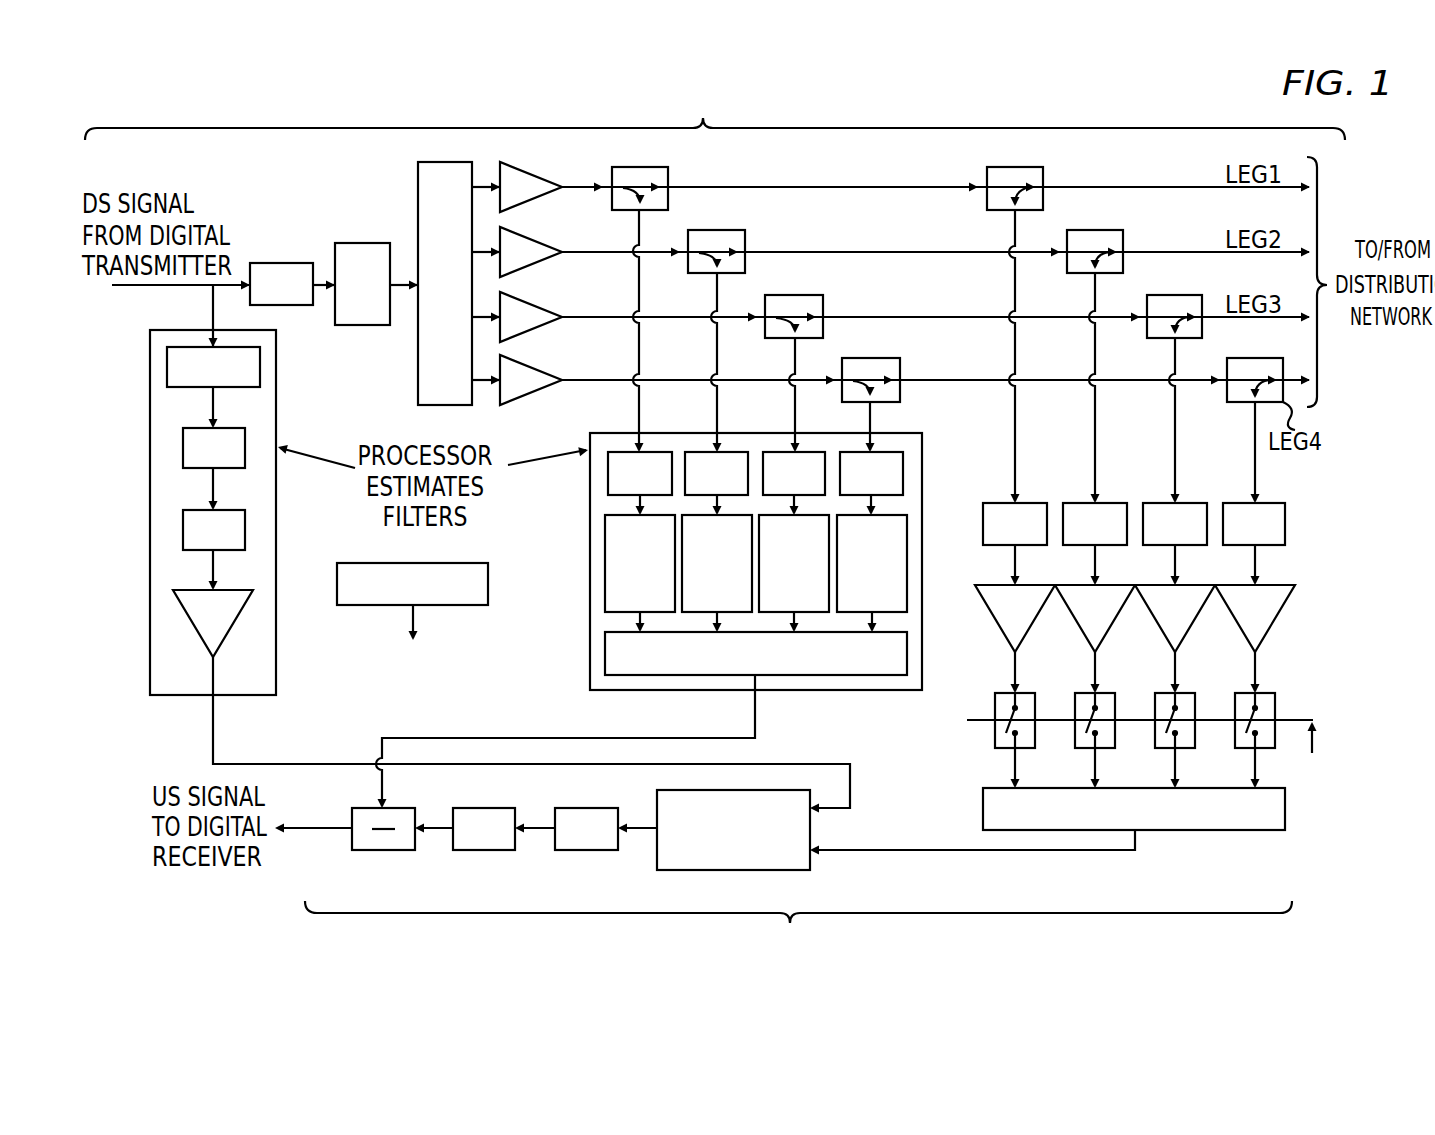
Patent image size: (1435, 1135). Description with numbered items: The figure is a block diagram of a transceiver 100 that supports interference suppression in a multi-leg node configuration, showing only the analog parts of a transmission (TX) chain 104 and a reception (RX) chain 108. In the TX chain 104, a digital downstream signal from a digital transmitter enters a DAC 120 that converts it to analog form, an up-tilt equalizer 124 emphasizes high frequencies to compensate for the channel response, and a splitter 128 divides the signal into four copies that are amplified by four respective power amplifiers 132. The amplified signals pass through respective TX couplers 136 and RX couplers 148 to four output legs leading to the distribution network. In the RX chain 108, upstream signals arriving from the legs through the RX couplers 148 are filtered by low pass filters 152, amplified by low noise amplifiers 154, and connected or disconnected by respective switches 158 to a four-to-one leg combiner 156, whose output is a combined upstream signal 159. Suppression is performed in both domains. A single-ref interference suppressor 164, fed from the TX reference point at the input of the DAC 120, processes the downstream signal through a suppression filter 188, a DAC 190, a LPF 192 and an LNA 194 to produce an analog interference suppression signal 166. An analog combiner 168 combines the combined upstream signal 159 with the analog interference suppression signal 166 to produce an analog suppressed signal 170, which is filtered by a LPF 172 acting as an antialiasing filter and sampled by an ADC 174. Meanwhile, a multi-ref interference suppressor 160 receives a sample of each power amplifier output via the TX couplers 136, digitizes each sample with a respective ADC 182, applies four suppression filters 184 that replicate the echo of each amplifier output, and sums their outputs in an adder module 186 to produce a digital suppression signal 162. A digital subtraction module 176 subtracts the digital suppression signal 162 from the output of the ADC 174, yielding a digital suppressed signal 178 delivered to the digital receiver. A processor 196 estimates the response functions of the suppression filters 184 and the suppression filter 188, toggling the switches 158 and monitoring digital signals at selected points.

The transceiver 100 is at (206, 94).
The transmission (TX) chain 104 is at (600, 128).
The reception (RX) chain 108 is at (1256, 913).
The Digital to Analog Converter (DAC) 120 is at (283, 262).
The up-tilt equalizer 124 is at (362, 243).
The splitter 128 is at (418, 367).
The Power Amplifiers (PAs) 132 is at (540, 162).
The TX couplers 136 is at (668, 165).
The RX couplers 148 is at (1043, 165).
The Low Pass Filters (LPFs) 152 is at (996, 503).
The Low Noise Amplifiers (LNAs) 154 is at (1073, 618).
The leg combiner 156 is at (1195, 832).
The switch 158 is at (995, 744).
The combined upstream signal 159 is at (928, 850).
The multi-ref interference suppressor 160 is at (590, 511).
The digital suppression signal 162 is at (757, 718).
The single-ref interference suppressor 164 is at (276, 406).
The analog interference suppression signal 166 is at (215, 722).
The analog combiner 168 is at (810, 823).
The analog suppressed signal 170 is at (640, 832).
The LPF 172 is at (588, 850).
The Analog to Digital Converter (ADC) 174 is at (487, 850).
The digital subtraction module 176 is at (385, 850).
The digital suppressed signal 178 is at (317, 832).
The ADC 182 is at (688, 452).
The suppression filters 184 is at (756, 563).
The adder module 186 is at (605, 656).
The suppression filter 188 is at (167, 372).
The DAC 190 is at (183, 450).
The LPF 192 is at (183, 532).
The LNA 194 is at (185, 614).
The processor 196 is at (488, 580).